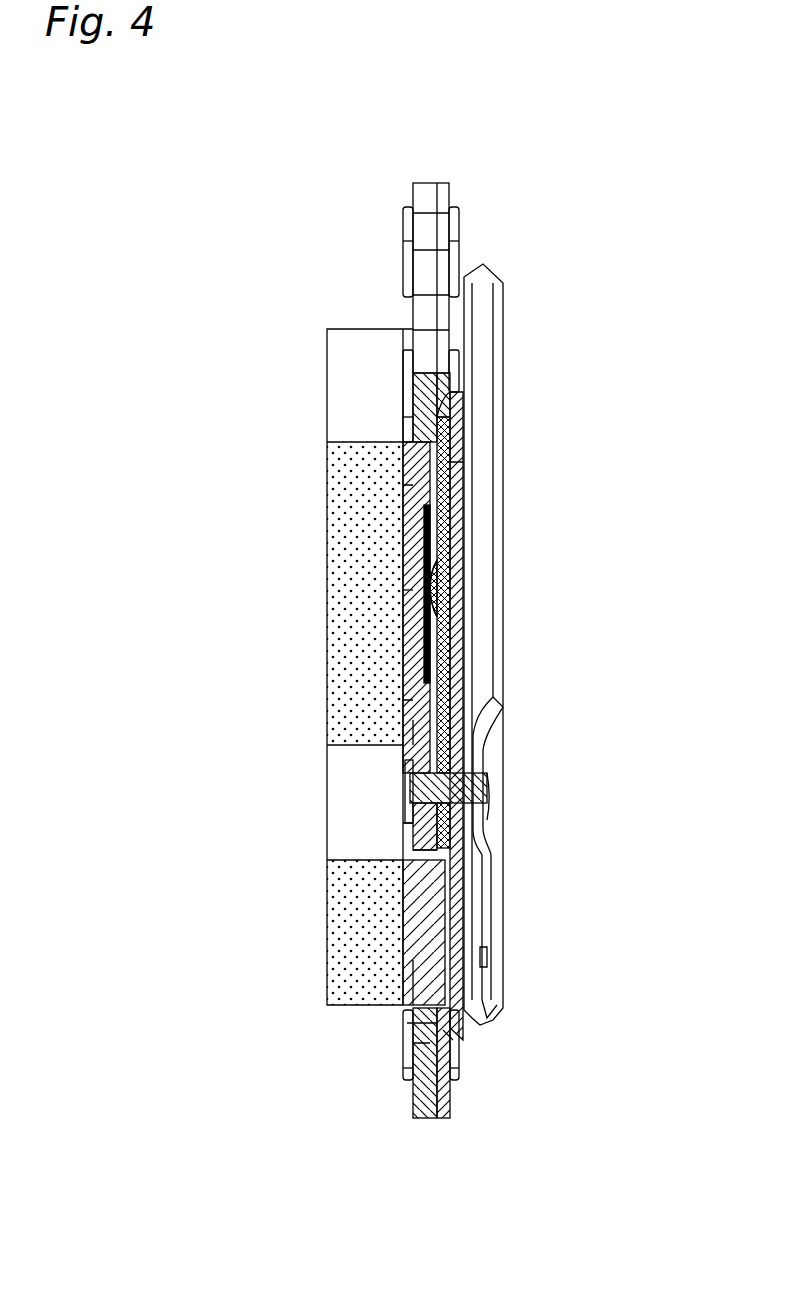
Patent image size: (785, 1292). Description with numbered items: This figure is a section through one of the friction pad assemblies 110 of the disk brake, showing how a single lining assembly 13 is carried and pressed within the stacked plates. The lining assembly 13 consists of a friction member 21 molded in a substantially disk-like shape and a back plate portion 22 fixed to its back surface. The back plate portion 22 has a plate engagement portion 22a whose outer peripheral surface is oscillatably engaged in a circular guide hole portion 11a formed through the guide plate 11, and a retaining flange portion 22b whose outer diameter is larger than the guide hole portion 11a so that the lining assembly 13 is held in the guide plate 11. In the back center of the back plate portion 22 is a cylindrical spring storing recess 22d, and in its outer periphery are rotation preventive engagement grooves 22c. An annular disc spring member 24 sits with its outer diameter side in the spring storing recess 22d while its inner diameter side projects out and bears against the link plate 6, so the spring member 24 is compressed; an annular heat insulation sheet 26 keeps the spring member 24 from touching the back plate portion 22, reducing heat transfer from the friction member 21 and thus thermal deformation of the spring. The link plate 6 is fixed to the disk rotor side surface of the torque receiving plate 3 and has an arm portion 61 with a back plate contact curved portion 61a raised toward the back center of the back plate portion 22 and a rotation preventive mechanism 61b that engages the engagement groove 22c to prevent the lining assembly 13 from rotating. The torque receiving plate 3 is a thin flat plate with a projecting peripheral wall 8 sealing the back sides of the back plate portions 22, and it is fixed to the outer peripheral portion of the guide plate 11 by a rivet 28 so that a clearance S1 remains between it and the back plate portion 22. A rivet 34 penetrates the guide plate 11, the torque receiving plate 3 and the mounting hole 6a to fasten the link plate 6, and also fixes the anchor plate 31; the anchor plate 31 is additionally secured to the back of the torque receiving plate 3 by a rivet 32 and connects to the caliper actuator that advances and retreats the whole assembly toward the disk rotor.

The friction pad assembly 110 is at (568, 186).
The torque receiving plate 3 is at (475, 651).
The link plate 6 is at (465, 447).
The mounting hole 6a is at (405, 792).
The peripheral wall 8 is at (457, 1060).
The guide plate 11 is at (408, 172).
The guide hole portion 11a is at (412, 728).
The lining assembly 13 is at (318, 377).
The friction member 21 is at (360, 578).
The back plate portion 22 is at (400, 565).
The plate engagement portion 22a is at (415, 850).
The retaining flange portion 22b is at (405, 828).
The rotation preventive engagement groove 22c is at (452, 468).
The spring storing recess 22d is at (452, 558).
The spring member 24 is at (452, 535).
The heat insulation sheet 26 is at (410, 535).
The rivet 28 is at (476, 205).
The anchor plate 31 is at (518, 678).
The rivet 32 is at (487, 958).
The rivet 34 is at (487, 792).
The arm portion 61 is at (452, 497).
The back plate contact curved portion 61a is at (410, 590).
The rotation preventive mechanism 61b is at (405, 485).
The clearance S1 is at (445, 1042).